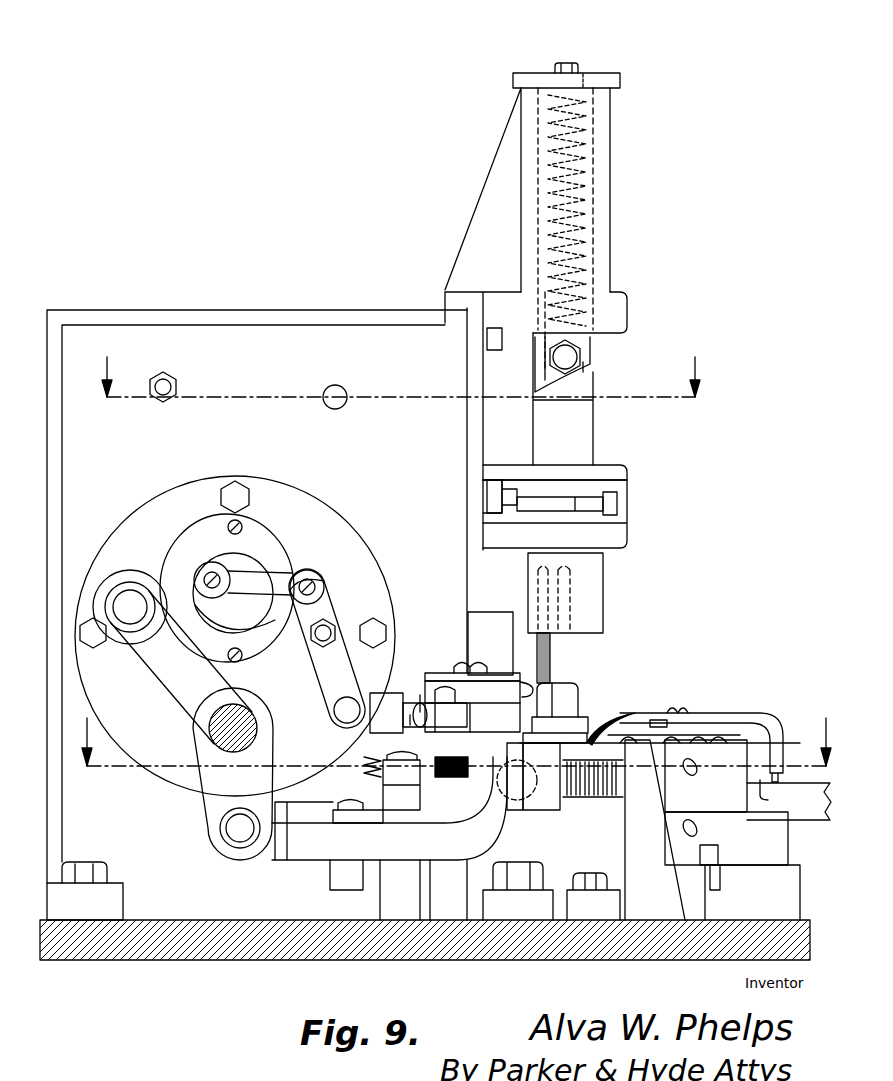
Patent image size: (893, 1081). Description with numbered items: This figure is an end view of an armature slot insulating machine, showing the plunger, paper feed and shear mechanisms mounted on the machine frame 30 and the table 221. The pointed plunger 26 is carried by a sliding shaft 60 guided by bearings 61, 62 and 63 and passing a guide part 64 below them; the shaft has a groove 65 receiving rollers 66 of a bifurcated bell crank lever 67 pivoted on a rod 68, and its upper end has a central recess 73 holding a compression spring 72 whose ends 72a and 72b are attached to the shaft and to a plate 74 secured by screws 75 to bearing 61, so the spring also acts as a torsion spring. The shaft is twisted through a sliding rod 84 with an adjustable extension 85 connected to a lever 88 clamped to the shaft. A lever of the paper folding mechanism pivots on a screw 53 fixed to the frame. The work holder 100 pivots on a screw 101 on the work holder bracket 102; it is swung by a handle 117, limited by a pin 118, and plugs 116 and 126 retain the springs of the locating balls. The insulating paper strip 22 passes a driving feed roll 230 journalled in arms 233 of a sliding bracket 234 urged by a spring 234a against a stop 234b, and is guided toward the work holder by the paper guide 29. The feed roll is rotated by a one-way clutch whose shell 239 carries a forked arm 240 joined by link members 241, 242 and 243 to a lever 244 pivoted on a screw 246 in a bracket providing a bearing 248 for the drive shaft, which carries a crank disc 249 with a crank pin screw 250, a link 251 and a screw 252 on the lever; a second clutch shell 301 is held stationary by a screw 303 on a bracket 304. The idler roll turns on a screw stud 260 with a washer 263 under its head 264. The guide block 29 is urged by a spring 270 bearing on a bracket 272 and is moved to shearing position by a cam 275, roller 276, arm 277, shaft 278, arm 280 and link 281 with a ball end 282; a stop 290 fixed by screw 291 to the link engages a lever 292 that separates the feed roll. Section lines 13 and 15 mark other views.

The section line 13- 13 is at (453, 743).
The section line 15- 15 is at (406, 363).
The insulating paper strip 22 is at (497, 765).
The pointed plunger 26 is at (550, 654).
The paper guide 29 is at (548, 812).
The machine frame 30 is at (468, 575).
The screw 53 is at (168, 386).
The sliding shaft 60 is at (605, 345).
The bearing 61 is at (612, 128).
The bearing 62 is at (612, 466).
The bearing 63 is at (618, 540).
The guide block 64 is at (605, 585).
The groove 65 is at (585, 352).
The rollers 66 is at (585, 364).
The bifurcated bell crank lever 67 is at (533, 365).
The rod 68 is at (340, 386).
The compression spring 72 is at (580, 186).
The spring end 72a is at (548, 325).
The spring end 72b is at (585, 75).
The central recess 73 is at (584, 204).
The plate 74 is at (620, 82).
The screws 75 is at (564, 63).
The sliding rod 84 is at (490, 509).
The adjustable extension 85 is at (615, 496).
The lever 88 is at (620, 509).
The work holder 100 is at (770, 855).
The screw 101 is at (780, 794).
The work holder bracket 102 is at (783, 902).
The plug 116 is at (697, 828).
The handle 117 is at (822, 822).
The pin 118 is at (719, 853).
The plug 126 is at (694, 772).
The table 221 is at (238, 962).
The driving feed roll 230 is at (458, 778).
The arms 233 is at (450, 742).
The bracket 234 is at (362, 762).
The spring 234a is at (345, 768).
The stop 234b is at (335, 880).
The clutch shell 239 is at (566, 697).
The forked arm 240 is at (485, 708).
The link member 241 is at (420, 695).
The link member 242 is at (410, 715).
The link member 243 is at (375, 705).
The lever 244 is at (338, 718).
The screw 246 is at (325, 625).
The bearing 248 is at (262, 530).
The crank disc 249 is at (248, 562).
The crank pin screw 250 is at (205, 578).
The link 251 is at (268, 580).
The screw 252 is at (312, 580).
The screw stud 260 is at (590, 712).
The washer 263 is at (612, 740).
The head 264 is at (600, 735).
The spring 270 is at (605, 798).
The bracket 272 is at (633, 854).
The cam 275 is at (205, 548).
The roller 276 is at (108, 588).
The arm 277 is at (160, 678).
The shaft 278 is at (210, 735).
The arm 280 is at (220, 803).
The link 281 is at (287, 870).
The ball end 282 is at (519, 811).
The stop 290 is at (333, 830).
The screw 291 is at (340, 803).
The lever 292 is at (378, 823).
The clutch shell 301 is at (437, 680).
The screw 303 is at (526, 680).
The bracket 304 is at (492, 616).